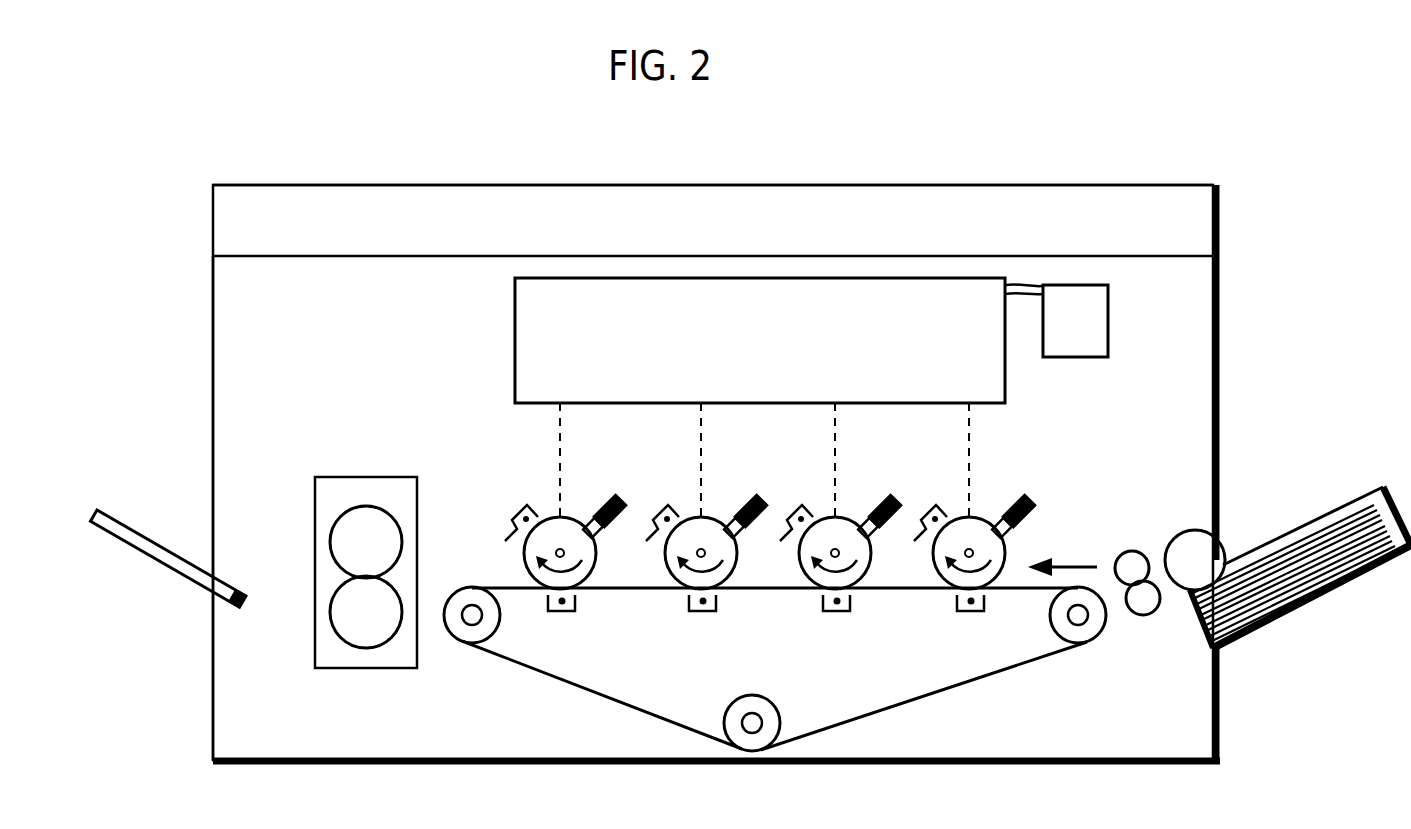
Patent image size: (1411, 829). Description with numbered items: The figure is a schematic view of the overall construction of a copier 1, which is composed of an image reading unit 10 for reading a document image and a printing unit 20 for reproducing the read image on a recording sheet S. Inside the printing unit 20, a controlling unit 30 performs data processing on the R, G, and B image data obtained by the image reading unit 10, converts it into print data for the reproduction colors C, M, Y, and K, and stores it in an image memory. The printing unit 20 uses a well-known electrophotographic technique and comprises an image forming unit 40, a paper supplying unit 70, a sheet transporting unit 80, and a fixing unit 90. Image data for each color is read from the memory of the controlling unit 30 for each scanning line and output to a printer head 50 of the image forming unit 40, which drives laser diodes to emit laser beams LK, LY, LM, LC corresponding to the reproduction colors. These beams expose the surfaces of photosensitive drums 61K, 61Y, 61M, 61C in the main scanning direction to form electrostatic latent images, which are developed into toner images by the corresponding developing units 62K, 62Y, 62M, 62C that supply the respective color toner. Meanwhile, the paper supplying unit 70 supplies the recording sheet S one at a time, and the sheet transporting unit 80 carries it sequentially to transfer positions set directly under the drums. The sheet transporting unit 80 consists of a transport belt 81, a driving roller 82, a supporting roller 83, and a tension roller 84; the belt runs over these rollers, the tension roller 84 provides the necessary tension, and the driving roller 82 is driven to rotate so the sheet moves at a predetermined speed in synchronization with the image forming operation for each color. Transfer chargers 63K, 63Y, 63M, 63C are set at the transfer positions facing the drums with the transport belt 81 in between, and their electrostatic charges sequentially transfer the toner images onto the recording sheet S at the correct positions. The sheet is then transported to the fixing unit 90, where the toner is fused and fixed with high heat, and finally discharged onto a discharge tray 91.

The copier 1 is at (834, 163).
The image reading unit 10 is at (1204, 230).
The printing unit 20 is at (1284, 326).
The controlling unit 30 is at (1108, 327).
The image forming unit 40 is at (1058, 442).
The printer head 50 is at (1005, 376).
The laser beam LC is at (558, 450).
The laser beam LM is at (699, 450).
The laser beam LY is at (833, 450).
The laser beam LK is at (967, 450).
The photosensitive drum 61C is at (550, 547).
The photosensitive drum 61M is at (691, 547).
The photosensitive drum 61Y is at (825, 547).
The photosensitive drum 61K is at (959, 547).
The developing unit 62C is at (633, 483).
The developing unit 62M is at (774, 483).
The developing unit 62Y is at (908, 483).
The developing unit 62K is at (1042, 483).
The transfer charger 63C is at (565, 613).
The transfer charger 63M is at (706, 613).
The transfer charger 63Y is at (840, 613).
The transfer charger 63K is at (974, 613).
The paper supplying unit 70 is at (1259, 530).
The recording sheet S is at (1338, 522).
The sheet transporting unit 80 is at (1030, 698).
The transport belt 81 is at (945, 690).
The driving roller 82 is at (468, 635).
The supporting roller 83 is at (1088, 630).
The tension roller 84 is at (752, 750).
The fixing unit 90 is at (364, 488).
The discharge tray 91 is at (167, 548).